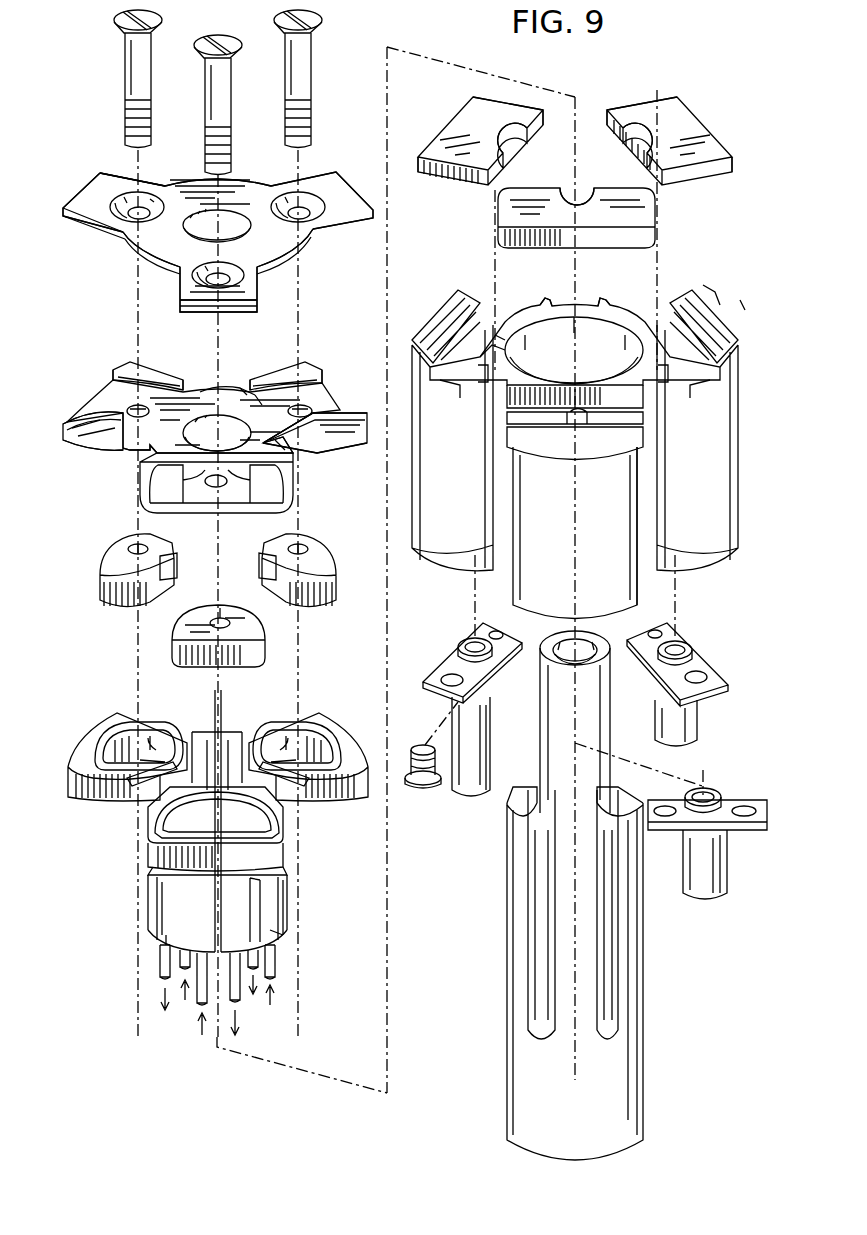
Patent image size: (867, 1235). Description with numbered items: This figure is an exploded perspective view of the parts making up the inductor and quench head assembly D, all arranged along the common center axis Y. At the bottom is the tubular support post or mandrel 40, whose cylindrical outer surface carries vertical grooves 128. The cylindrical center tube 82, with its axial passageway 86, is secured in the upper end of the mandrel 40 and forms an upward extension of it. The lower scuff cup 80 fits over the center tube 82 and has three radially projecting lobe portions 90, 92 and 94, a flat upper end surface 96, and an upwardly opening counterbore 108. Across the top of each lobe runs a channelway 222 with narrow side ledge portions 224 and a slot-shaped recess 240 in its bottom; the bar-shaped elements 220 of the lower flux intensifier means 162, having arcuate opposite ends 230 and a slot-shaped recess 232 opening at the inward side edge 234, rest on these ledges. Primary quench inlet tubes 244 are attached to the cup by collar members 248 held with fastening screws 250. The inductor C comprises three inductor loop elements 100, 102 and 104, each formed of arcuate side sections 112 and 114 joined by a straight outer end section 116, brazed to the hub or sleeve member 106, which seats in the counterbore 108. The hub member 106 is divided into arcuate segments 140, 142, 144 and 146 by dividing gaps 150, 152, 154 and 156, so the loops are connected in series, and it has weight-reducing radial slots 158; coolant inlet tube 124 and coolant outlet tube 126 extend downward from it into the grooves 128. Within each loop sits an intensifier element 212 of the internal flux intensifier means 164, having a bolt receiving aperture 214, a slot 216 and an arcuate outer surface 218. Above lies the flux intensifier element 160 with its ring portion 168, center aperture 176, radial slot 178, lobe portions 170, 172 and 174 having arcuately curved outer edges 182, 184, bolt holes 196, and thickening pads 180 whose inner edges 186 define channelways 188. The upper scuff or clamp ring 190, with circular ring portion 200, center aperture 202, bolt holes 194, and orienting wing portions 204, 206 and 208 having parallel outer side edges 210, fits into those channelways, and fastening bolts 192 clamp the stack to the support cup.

The tubular support post or mandrel 40 is at (578, 973).
The lower scuff cup 80 is at (579, 427).
The center tube 82 is at (553, 722).
The axial passageway 86 is at (560, 655).
The lobe portion 90 is at (440, 520).
The lobe portion 92 is at (695, 525).
The lobe portion 94 is at (530, 530).
The flat upper end surface 96 is at (548, 308).
The inductor loop element 100 is at (202, 855).
The inductor loop element 102 is at (312, 769).
The inductor loop element 104 is at (285, 900).
The hub or sleeve member 106 is at (150, 935).
The counterbore 108 is at (598, 325).
The arcuate side section 112 is at (209, 757).
The arcuate side section 114 is at (217, 763).
The straight outer end section 116 is at (105, 740).
The coolant inlet tube 124 is at (275, 970).
The coolant outlet tube 126 is at (160, 975).
The vertical grooves 128 is at (535, 945).
The arcuate segment 140 is at (264, 917).
The arcuate segment 142 is at (270, 930).
The arcuate segment 144 is at (203, 748).
The arcuate segment 146 is at (147, 783).
The dividing gap 150 is at (290, 922).
The dividing gap 152 is at (297, 722).
The dividing gap 154 is at (170, 730).
The dividing gap 156 is at (218, 915).
The radial slots 158 is at (152, 885).
The flux intensifier element 160 is at (204, 434).
The lower flux intensifier means 162 is at (577, 162).
The internal flux intensifier means 164 is at (202, 587).
The ring portion 168 is at (205, 395).
The lobe portion 170 is at (130, 453).
The lobe portion 172 is at (245, 385).
The lobe portion 174 is at (264, 463).
The center aperture 176 is at (230, 432).
The radial slot 178 is at (297, 445).
The thickening pads 180 is at (128, 370).
The arcuately curved outer edge 182 is at (80, 447).
The arcuately curved outer edge 184 is at (180, 383).
The inner edges 186 is at (100, 392).
The channelway 188 is at (325, 408).
The upper scuff or clamp ring 190 is at (204, 232).
The fastening bolts 192 is at (145, 65).
The bolt holes 194 is at (143, 208).
The bolt holes 196 is at (142, 416).
The circular ring portion 200 is at (308, 240).
The center aperture 202 is at (236, 233).
The orienting wing portion 204 is at (90, 190).
The orienting wing portion 206 is at (340, 198).
The orienting wing portion 208 is at (240, 294).
The outer side edges 210 is at (118, 173).
The intensifier elements 212 is at (100, 555).
The bolt receiving aperture 214 is at (133, 545).
The slot 216 is at (268, 578).
The arcuate outer surface 218 is at (145, 580).
The bar-shaped elements 220 is at (468, 113).
The channelways 222 is at (460, 380).
The side ledge portions 224 is at (450, 295).
The opposite ends 230 is at (488, 100).
The slot-shaped recess 232 is at (647, 155).
The inward side edge 234 is at (545, 120).
The slot-shaped recesses 240 is at (512, 345).
The primary quench inlet tubes 244 is at (465, 785).
The collar members 248 is at (447, 660).
The fastening screws 250 is at (423, 745).
The inductor C is at (209, 855).
The inductor and quench head assembly D is at (447, 50).
The center axis Y is at (218, 1040).